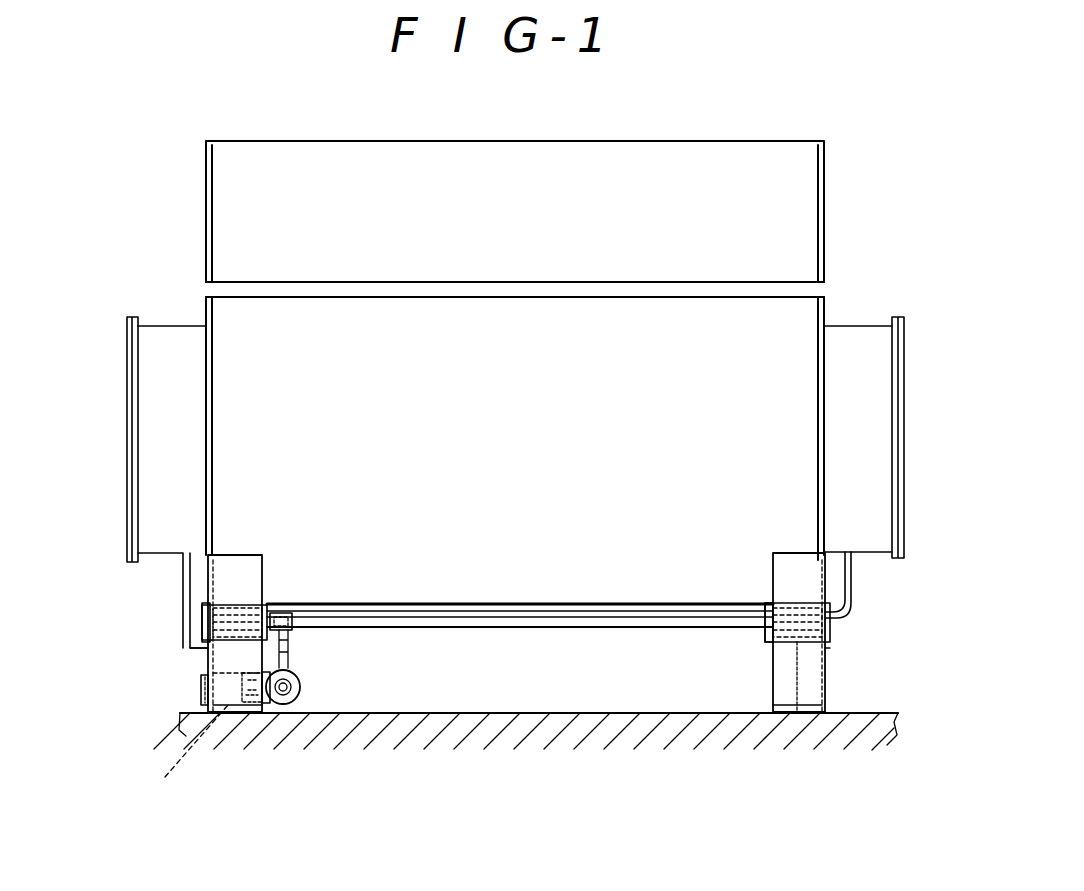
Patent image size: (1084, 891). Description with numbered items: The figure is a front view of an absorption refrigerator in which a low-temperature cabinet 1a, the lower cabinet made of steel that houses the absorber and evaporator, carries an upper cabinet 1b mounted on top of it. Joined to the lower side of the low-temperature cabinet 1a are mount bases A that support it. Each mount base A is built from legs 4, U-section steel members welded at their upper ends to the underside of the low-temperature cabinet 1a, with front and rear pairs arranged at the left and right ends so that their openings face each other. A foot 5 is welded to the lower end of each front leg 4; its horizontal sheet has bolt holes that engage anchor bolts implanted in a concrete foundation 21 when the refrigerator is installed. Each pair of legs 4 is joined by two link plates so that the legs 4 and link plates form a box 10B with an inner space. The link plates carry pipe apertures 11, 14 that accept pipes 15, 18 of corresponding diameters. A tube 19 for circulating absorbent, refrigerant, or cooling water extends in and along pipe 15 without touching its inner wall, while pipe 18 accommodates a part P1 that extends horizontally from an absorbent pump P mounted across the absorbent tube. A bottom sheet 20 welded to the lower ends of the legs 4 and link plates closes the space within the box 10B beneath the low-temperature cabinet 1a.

The low-temperature cabinet 1a is at (795, 318).
The upper cabinet 1b is at (807, 192).
The leg 4 is at (230, 633).
The foot 5 is at (228, 665).
The box 10B is at (268, 713).
The pipe aperture 11 is at (205, 606).
The pipe aperture 14 is at (208, 672).
The pipe 15 is at (188, 648).
The pipe 18 is at (190, 703).
The tube 19 is at (225, 608).
The bottom sheet 20 is at (240, 715).
The foundation 21 is at (662, 730).
The mount base A is at (200, 660).
The absorbent pump P is at (303, 685).
The part of absorbent pump P1 is at (176, 761).